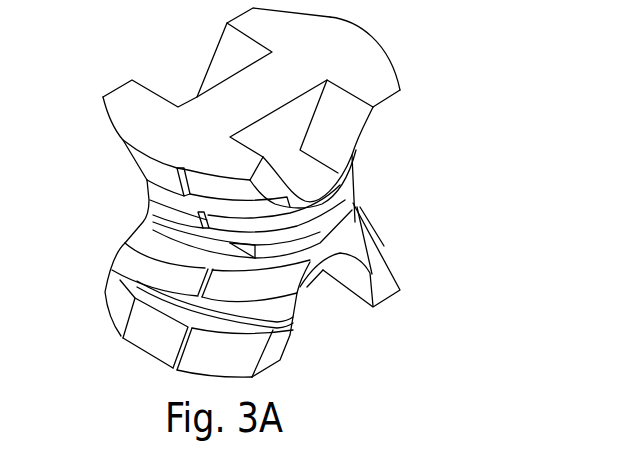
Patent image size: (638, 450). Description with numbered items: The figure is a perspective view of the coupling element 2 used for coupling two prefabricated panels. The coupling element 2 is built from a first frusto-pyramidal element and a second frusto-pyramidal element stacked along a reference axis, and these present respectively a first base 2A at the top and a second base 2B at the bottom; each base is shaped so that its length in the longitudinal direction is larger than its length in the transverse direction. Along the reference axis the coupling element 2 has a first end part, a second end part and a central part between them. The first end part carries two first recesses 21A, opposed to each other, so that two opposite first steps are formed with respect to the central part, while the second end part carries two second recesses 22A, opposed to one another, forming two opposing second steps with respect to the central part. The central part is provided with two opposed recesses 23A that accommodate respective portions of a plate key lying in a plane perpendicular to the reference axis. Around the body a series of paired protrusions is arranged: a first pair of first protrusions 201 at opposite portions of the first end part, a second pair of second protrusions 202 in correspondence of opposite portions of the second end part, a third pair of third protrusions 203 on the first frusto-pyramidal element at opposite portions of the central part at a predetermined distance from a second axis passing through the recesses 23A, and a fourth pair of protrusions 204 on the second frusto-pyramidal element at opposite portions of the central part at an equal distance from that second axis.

The coupling element 2 is at (452, 52).
The first base 2A is at (317, 53).
The second base 2B is at (388, 300).
The first recesses 21A is at (176, 56).
The second recesses 22A is at (340, 326).
The recesses 23A is at (162, 235).
The first protrusions 201 is at (128, 160).
The second protrusions 202 is at (370, 230).
The third protrusions 203 is at (150, 205).
The fourth protrusions 204 is at (165, 262).